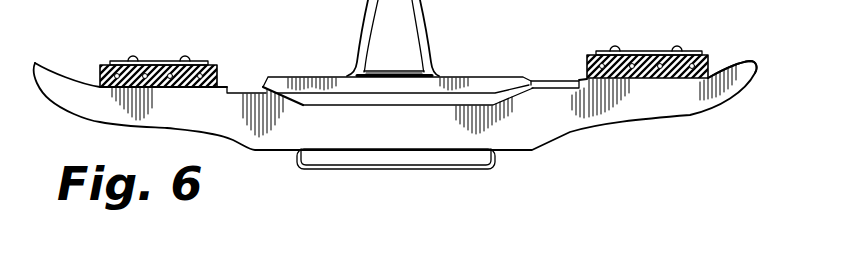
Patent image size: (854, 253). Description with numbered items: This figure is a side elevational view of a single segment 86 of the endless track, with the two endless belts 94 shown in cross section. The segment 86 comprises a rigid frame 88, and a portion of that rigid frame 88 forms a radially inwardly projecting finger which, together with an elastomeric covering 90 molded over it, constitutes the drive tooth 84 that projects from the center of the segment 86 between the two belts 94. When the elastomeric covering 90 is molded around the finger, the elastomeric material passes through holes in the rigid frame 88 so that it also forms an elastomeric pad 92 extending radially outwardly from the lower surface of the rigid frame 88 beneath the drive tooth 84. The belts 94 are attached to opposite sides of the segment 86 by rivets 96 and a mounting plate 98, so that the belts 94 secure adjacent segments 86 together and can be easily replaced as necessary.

The drive tooth 84 is at (398, 52).
The elastomeric covering 90 is at (425, 22).
The segment 86 is at (719, 59).
The rigid frame 88 is at (98, 108).
The elastomeric pad 92 is at (404, 156).
The endless belt 94 is at (100, 81).
The rivet 96 is at (180, 60).
The mounting plate 98 is at (153, 59).